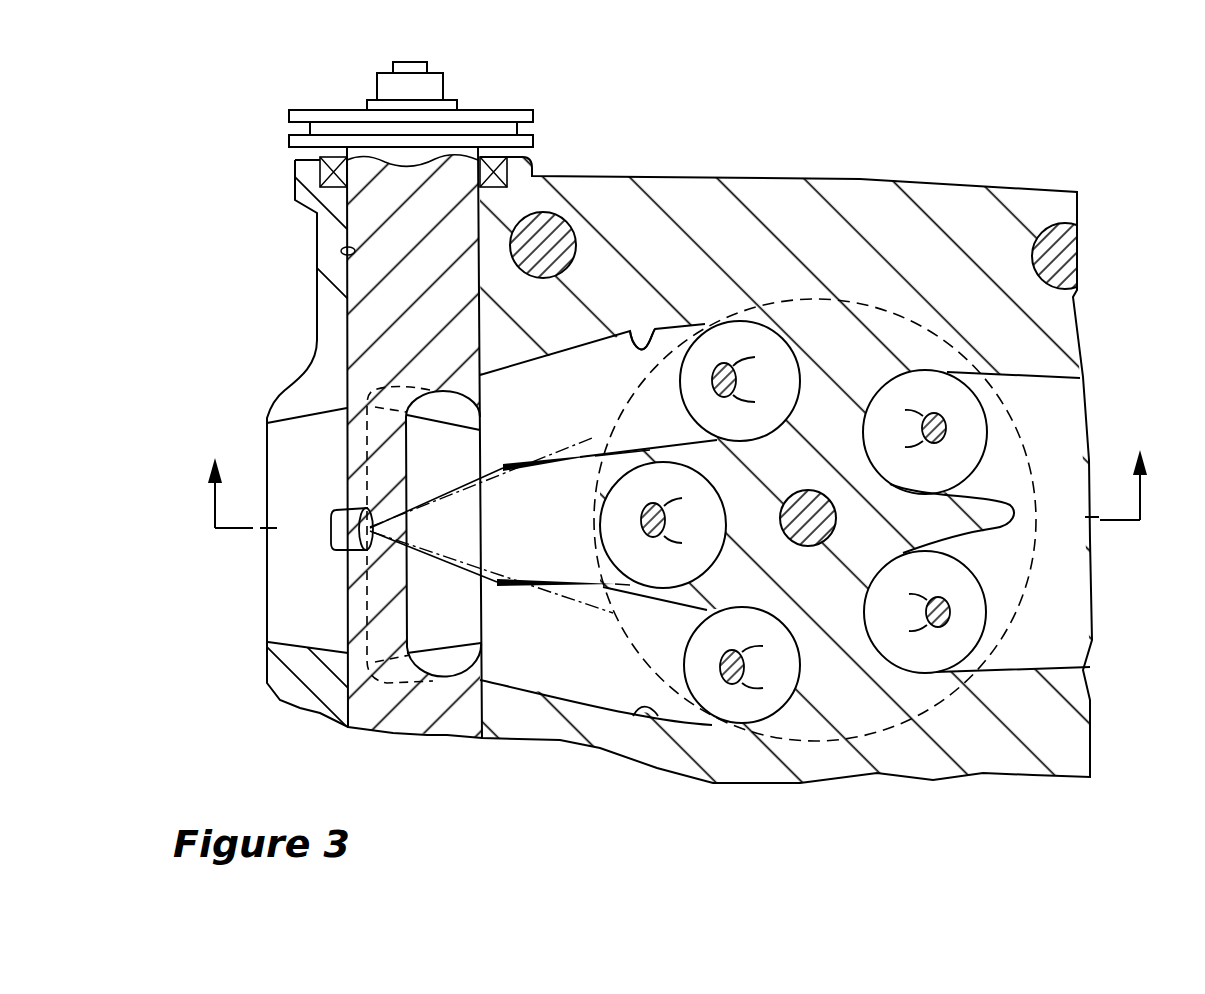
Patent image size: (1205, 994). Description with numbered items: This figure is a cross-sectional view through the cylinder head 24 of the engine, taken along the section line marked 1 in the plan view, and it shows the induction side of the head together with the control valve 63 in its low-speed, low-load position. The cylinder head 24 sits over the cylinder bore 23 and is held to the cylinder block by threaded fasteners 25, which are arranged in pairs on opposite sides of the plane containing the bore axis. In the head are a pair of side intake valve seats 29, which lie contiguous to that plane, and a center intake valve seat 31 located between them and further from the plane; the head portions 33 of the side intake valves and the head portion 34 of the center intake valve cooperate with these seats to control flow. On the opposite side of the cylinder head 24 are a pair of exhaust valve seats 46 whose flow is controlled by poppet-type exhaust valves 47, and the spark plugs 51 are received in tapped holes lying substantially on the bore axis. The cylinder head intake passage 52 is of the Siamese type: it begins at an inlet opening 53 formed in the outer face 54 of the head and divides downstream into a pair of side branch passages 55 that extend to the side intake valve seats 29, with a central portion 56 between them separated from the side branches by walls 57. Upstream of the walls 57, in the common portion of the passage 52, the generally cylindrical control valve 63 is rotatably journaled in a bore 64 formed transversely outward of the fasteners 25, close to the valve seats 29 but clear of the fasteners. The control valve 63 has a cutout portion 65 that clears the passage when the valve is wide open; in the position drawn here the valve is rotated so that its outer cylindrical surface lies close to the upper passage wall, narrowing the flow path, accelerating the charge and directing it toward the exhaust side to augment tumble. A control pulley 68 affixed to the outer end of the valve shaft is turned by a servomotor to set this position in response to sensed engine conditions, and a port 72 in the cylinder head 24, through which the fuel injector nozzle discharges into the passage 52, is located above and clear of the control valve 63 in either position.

The section line 1- 1 is at (668, 489).
The cylinder bore 23 is at (890, 720).
The cylinder head 24 is at (1037, 767).
The threaded fasteners 25 is at (567, 228).
The side intake valve seats 29 is at (744, 321).
The center intake valve seat 31 is at (607, 558).
The head portions 33 is at (718, 433).
The head portion 34 is at (615, 523).
The exhaust valve seats 46 is at (963, 380).
The exhaust valves 47 is at (917, 385).
The spark plugs 51 is at (828, 493).
The cylinder head intake passage 52 is at (540, 692).
The inlet opening 53 is at (277, 440).
The outer face 54 is at (268, 658).
The side branch passages 55 is at (655, 325).
The central portion 56 is at (528, 498).
The walls 57 is at (614, 447).
The control valve 63 is at (383, 720).
The bore 64 is at (341, 251).
The cutout portion 65 is at (445, 663).
The control pulley 68 is at (487, 107).
The port 72 is at (332, 552).